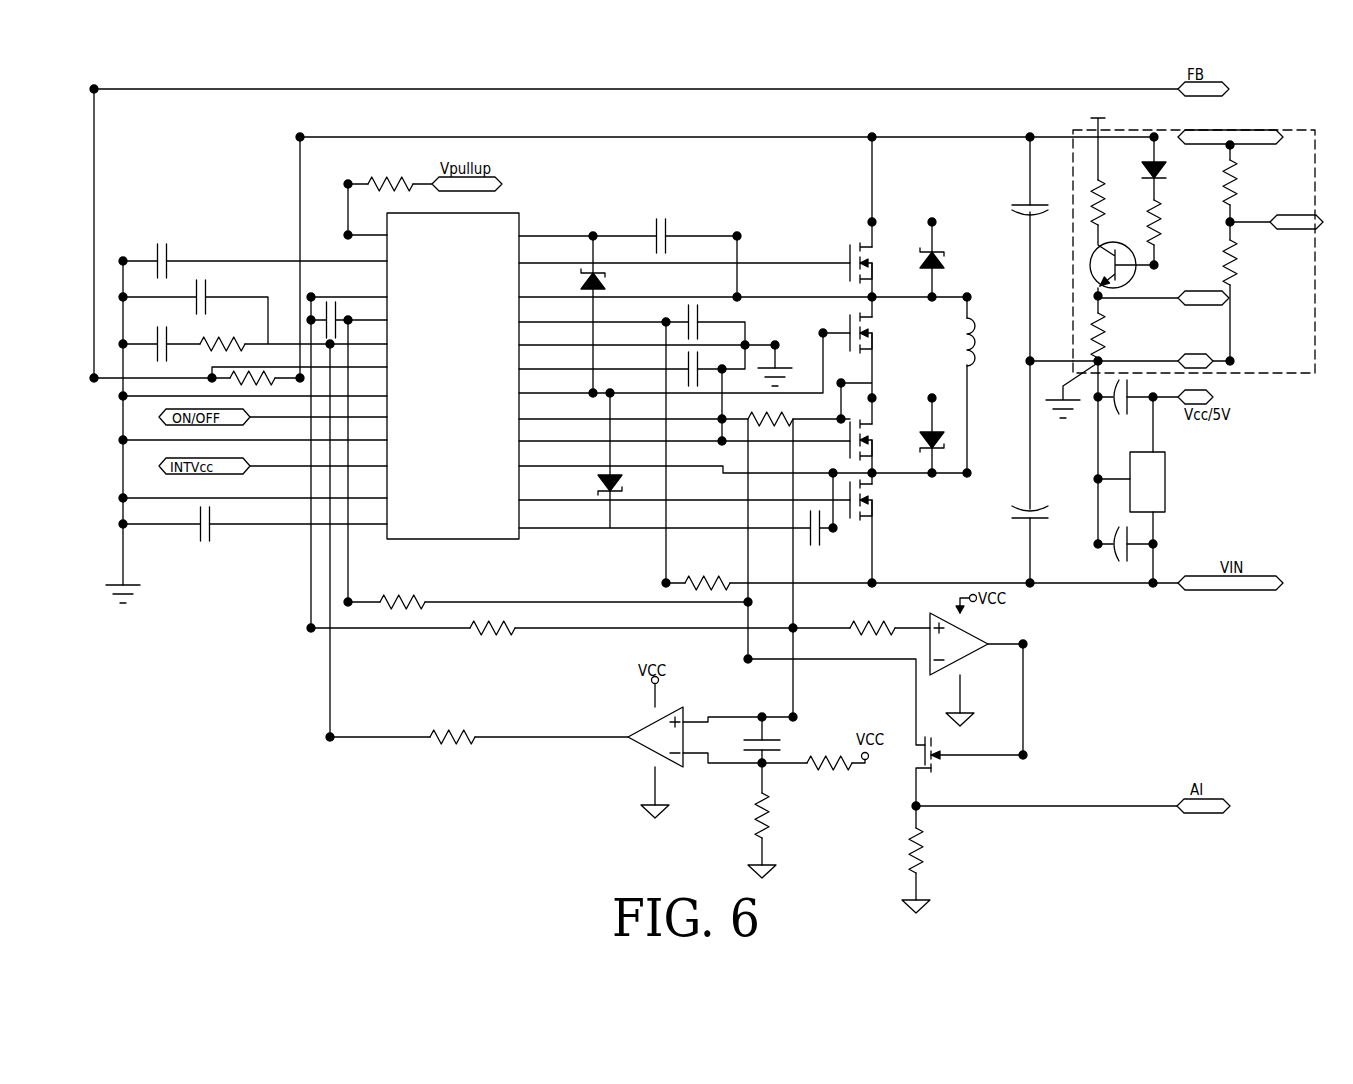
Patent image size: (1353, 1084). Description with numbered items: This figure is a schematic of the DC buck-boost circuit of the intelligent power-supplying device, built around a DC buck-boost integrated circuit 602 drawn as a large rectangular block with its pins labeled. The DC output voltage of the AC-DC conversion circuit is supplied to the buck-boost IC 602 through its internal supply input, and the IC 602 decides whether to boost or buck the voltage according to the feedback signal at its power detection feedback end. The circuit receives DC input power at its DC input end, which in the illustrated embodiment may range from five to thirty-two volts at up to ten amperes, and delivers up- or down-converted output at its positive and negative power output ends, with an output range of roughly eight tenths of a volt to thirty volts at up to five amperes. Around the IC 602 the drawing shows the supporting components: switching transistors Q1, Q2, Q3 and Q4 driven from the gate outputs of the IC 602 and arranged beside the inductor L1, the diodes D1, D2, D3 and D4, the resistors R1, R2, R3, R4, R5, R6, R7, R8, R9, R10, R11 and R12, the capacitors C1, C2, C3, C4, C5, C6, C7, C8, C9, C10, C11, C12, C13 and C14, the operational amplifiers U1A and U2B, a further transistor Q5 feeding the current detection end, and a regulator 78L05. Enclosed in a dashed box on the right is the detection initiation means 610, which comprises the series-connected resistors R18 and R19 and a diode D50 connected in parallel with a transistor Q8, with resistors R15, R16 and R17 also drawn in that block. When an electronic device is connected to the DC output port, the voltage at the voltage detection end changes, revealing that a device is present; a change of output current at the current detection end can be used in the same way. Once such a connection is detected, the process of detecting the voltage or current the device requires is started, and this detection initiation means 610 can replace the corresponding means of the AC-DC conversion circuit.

The DC buck-boost integrated circuit 602 is at (387, 539).
The detection initiation means 610 is at (1207, 299).
The sense resistor R1 is at (770, 410).
The resistor R2 is at (707, 573).
The resistor R3 is at (402, 592).
The resistor R4 is at (492, 638).
The resistor R5 is at (390, 174).
The resistor R6 is at (222, 334).
The resistor R7 is at (257, 384).
The resistor R8 is at (452, 727).
The resistor R9 is at (772, 815).
The resistor R10 is at (872, 618).
The resistor R11 is at (933, 850).
The resistor R12 is at (829, 753).
The resistor R15 is at (1114, 202).
The resistor R16 is at (1114, 335).
The resistor R17 is at (1169, 222).
The resistor R18 is at (1246, 182).
The resistor R19 is at (1246, 262).
The capacitor C1 is at (1020, 208).
The capacitor C2 is at (1041, 513).
The capacitor C3 is at (657, 224).
The capacitor C4 is at (707, 321).
The capacitor C5 is at (707, 367).
The capacitor C6 is at (828, 533).
The capacitor C7 is at (343, 318).
The capacitor C8 is at (160, 250).
The capacitor C9 is at (157, 334).
The capacitor C10 is at (217, 291).
The capacitor C11 is at (222, 522).
The capacitor C12 is at (779, 743).
The capacitor C13 is at (1132, 407).
The capacitor C14 is at (1104, 550).
The inductor L1 is at (981, 342).
The MOSFET Q1 is at (873, 263).
The MOSFET Q2 is at (873, 333).
The MOSFET Q3 is at (873, 440).
The MOSFET Q4 is at (873, 500).
The MOSFET Q5 is at (940, 758).
The transistor Q8 is at (1113, 256).
The diode D1 is at (944, 258).
The diode D2 is at (943, 432).
The diode D3 is at (605, 281).
The diode D4 is at (622, 485).
The diode D50 is at (1170, 173).
The op amp U1A is at (661, 725).
The op amp U2B is at (976, 640).
The voltage regulator 78L05 is at (1148, 482).